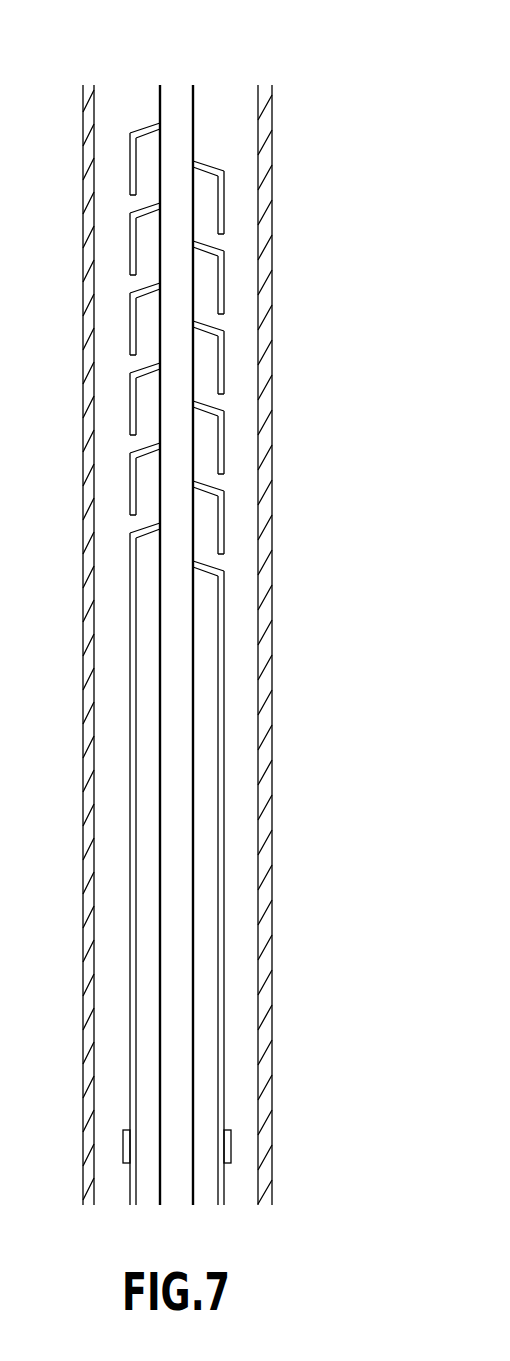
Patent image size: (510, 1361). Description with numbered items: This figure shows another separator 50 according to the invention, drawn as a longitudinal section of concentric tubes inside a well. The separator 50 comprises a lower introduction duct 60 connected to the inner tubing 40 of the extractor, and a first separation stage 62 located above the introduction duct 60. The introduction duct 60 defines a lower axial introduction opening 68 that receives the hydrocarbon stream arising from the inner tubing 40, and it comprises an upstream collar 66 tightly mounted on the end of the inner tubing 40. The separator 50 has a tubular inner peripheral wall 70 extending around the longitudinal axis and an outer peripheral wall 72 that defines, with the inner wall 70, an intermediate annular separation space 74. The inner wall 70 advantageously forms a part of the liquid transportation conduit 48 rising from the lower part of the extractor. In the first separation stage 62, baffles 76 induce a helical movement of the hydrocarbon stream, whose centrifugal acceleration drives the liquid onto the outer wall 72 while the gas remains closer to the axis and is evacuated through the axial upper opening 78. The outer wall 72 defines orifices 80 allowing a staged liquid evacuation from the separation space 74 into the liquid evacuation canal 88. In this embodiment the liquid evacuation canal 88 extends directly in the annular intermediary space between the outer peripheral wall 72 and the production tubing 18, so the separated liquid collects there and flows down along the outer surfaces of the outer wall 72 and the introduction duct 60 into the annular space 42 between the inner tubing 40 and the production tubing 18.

The production tubing 18 is at (88, 333).
The inner tubing 40 is at (132, 1187).
The annular space 42 is at (240, 1185).
The liquid transportation conduit 48 is at (185, 1177).
The separator 50 is at (119, 405).
The introduction duct 60 is at (225, 883).
The first separation stage 62 is at (241, 320).
The upstream collar 66 is at (230, 1148).
The lower axial introduction opening 68 is at (147, 1150).
The inner peripheral wall 70 is at (194, 368).
The outer peripheral wall 72 is at (225, 201).
The intermediate annular separation space 74 is at (203, 180).
The baffle 76 is at (148, 122).
The axial upper opening 78 is at (218, 118).
The orifice 80 is at (133, 282).
The liquid evacuation canal 88 is at (240, 557).